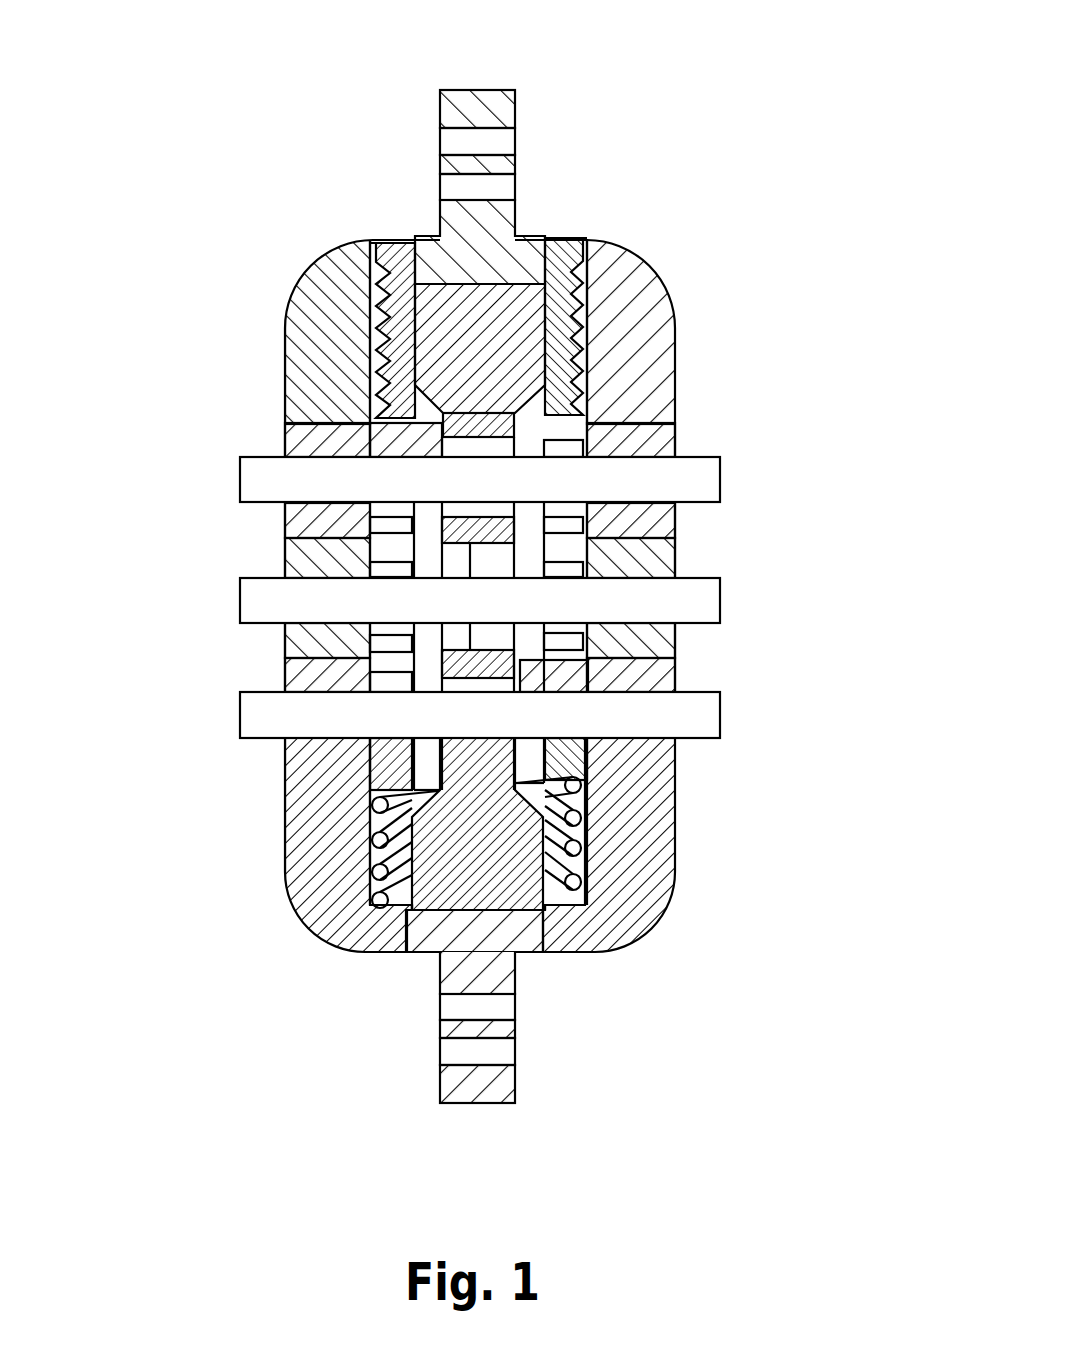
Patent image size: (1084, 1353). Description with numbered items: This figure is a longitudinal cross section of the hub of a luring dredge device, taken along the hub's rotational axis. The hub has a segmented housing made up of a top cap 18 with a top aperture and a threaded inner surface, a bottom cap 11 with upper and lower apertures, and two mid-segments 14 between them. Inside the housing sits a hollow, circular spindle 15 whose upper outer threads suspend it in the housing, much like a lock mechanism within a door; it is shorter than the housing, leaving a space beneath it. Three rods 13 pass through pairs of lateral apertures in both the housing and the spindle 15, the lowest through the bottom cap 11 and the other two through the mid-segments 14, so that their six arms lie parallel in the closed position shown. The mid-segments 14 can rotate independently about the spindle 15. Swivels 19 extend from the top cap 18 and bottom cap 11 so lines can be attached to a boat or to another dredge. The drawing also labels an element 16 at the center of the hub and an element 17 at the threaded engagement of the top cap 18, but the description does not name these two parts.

The bottom cap 11 is at (652, 803).
The rods 13 is at (720, 490).
The mid-segments 14 is at (285, 558).
The spindle 15 is at (403, 262).
The central block 16 is at (497, 353).
The threaded nut 17 is at (572, 267).
The top cap 18 is at (385, 334).
The swivels 19 is at (469, 95).